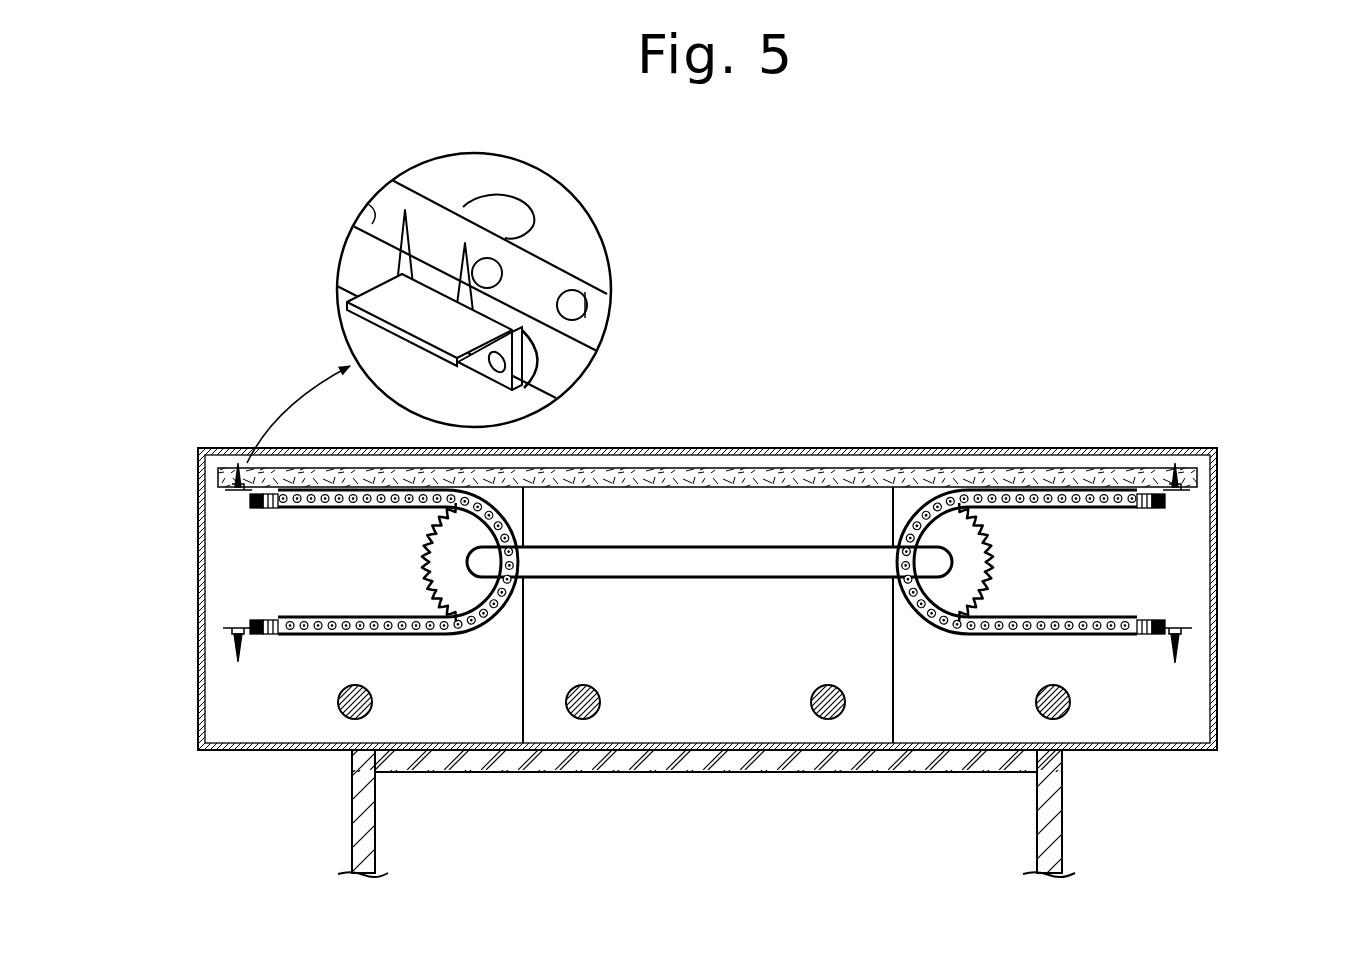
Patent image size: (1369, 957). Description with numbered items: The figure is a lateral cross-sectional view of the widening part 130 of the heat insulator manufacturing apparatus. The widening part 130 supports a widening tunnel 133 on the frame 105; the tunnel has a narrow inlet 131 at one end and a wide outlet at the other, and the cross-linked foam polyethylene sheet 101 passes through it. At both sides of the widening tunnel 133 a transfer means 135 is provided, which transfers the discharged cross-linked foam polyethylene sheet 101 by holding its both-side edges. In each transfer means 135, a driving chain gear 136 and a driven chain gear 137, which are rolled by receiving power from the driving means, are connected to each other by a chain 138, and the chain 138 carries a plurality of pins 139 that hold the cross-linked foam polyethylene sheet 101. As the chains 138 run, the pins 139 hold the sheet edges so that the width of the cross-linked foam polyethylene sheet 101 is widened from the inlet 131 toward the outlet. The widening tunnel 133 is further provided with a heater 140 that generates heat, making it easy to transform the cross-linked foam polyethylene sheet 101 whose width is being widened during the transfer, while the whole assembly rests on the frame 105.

The cross-linked foam polyethylene sheet 101 is at (723, 470).
The frame 105 is at (592, 772).
The widening part 130 is at (693, 810).
The inlet 131 is at (818, 503).
The widening tunnel 133 is at (1215, 672).
The transfer means 135 is at (250, 568).
The driving chain gear 136 is at (460, 603).
The driven chain gear 137 is at (958, 515).
The chain 138 is at (1098, 494).
The pins 139 is at (223, 465).
The heater 140 is at (353, 717).